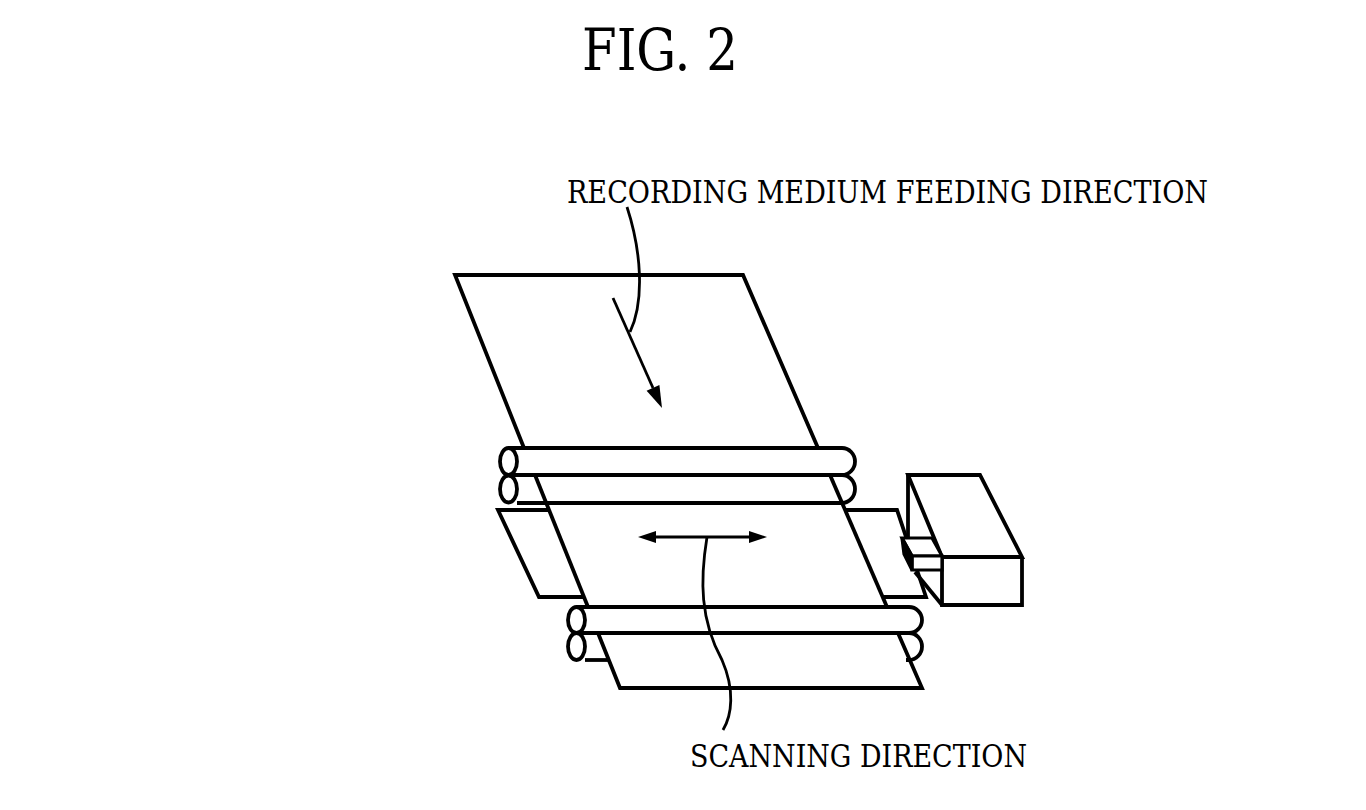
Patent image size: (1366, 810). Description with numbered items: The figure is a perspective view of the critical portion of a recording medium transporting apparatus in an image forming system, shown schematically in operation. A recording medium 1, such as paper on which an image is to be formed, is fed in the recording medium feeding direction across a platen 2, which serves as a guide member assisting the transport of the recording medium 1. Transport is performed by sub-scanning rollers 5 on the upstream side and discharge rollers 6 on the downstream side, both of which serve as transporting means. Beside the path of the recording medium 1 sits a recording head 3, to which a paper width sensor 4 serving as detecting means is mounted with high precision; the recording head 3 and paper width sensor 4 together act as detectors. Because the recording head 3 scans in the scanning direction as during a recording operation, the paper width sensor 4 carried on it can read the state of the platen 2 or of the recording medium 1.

The recording medium 1 is at (765, 355).
The platen 2 is at (522, 540).
The recording head 3 is at (997, 535).
The paper width sensor 4 is at (926, 549).
The sub-scanning rollers 5 is at (500, 489).
The discharge rollers 6 is at (568, 617).